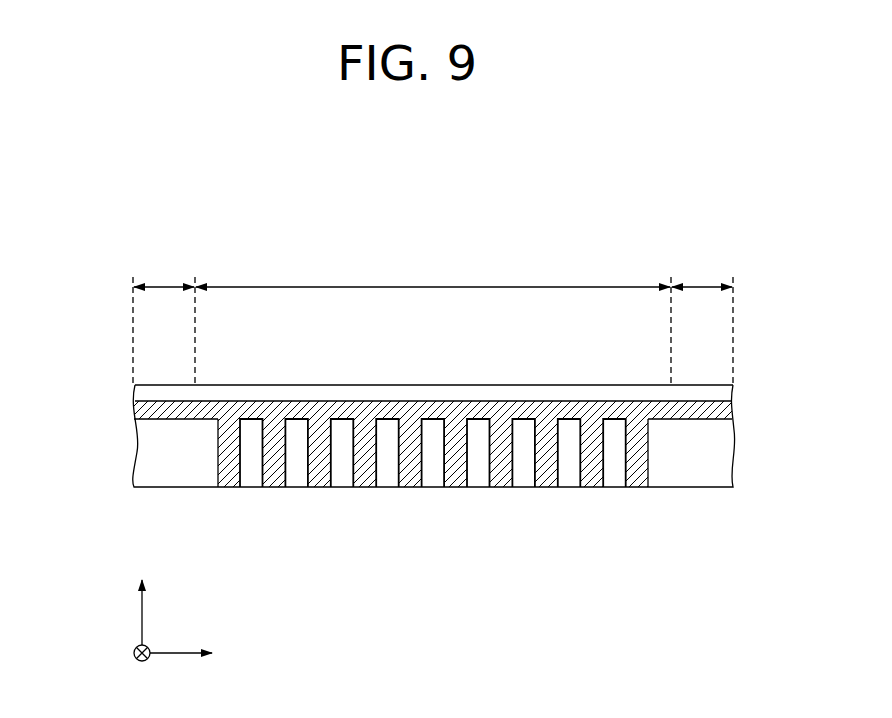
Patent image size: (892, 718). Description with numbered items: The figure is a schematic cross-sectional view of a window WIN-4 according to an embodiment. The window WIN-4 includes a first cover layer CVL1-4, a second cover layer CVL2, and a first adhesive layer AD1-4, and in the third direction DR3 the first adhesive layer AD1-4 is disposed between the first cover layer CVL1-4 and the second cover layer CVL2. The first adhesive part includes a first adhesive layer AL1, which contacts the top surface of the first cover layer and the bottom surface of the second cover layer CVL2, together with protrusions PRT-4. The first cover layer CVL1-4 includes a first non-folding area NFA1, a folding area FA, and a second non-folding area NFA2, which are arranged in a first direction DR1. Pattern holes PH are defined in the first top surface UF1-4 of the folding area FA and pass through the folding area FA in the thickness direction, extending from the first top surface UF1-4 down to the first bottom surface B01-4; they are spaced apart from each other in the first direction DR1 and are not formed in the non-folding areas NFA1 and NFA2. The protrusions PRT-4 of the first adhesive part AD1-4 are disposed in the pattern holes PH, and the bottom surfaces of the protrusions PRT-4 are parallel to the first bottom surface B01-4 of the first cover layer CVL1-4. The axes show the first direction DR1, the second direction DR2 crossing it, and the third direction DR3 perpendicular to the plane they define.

The window WIN-4 is at (637, 217).
The second cover layer CVL2 is at (718, 393).
The first adhesive layer AD1-4 is at (722, 409).
The first adhesive layer AL1 is at (428, 411).
The first cover layer CVL1-4 is at (718, 453).
The protrusions PRT-4 is at (318, 473).
The pattern hole PH is at (236, 476).
The first top surface UF1-4 is at (158, 412).
The first bottom surface B01-4 is at (160, 487).
The first non-folding area NFA1 is at (164, 318).
The folding area FA is at (433, 271).
The second non-folding area NFA2 is at (702, 318).
The first direction DR1 is at (203, 654).
The second direction DR2 is at (144, 668).
The third direction DR3 is at (144, 601).